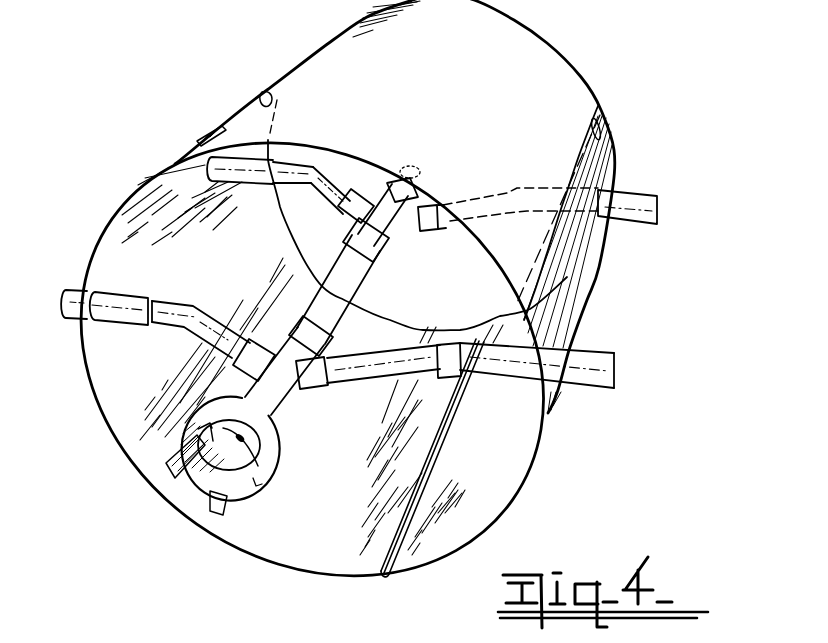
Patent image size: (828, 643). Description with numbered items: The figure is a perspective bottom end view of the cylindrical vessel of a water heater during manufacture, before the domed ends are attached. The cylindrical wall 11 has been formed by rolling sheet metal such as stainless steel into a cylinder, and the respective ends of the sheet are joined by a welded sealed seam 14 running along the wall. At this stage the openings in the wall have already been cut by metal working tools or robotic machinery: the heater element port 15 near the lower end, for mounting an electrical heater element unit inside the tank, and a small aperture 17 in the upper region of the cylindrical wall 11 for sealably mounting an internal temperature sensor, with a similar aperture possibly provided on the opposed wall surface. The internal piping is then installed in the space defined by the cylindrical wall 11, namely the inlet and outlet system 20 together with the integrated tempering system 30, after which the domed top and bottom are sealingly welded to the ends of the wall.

The cylindrical wall 11 is at (587, 293).
The sealed seam 14 is at (436, 467).
The heater element port 15 is at (214, 133).
The aperture 17 is at (265, 96).
The inlet and outlet system 20 is at (337, 419).
The tempering system 30 is at (312, 245).